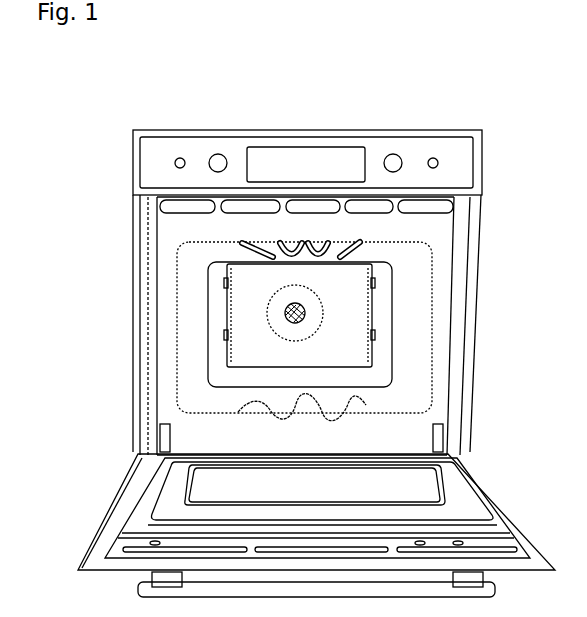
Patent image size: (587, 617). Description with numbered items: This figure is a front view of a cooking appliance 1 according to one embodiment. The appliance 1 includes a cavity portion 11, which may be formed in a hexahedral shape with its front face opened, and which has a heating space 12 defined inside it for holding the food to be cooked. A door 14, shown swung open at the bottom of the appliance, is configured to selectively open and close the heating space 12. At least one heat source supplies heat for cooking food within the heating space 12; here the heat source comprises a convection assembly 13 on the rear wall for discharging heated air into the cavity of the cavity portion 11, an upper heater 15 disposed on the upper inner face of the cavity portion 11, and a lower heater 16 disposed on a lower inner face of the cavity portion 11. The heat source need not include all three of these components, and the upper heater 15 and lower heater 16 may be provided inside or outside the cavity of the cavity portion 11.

The cooking appliance 1 is at (99, 108).
The cavity portion 11 is at (183, 262).
The heating space 12 is at (210, 250).
The convection assembly 13 is at (264, 316).
The door 14 is at (107, 513).
The upper heater 15 is at (366, 250).
The lower heater 16 is at (376, 405).